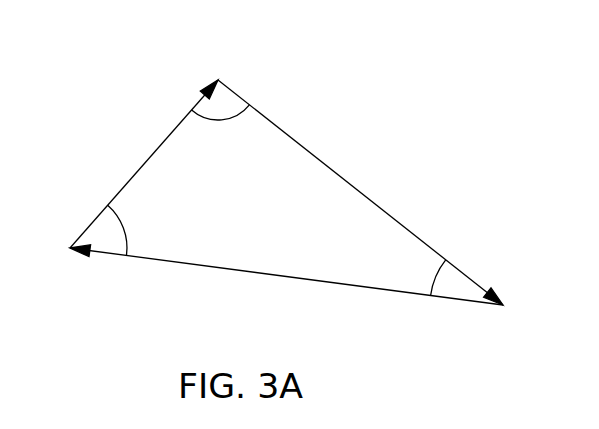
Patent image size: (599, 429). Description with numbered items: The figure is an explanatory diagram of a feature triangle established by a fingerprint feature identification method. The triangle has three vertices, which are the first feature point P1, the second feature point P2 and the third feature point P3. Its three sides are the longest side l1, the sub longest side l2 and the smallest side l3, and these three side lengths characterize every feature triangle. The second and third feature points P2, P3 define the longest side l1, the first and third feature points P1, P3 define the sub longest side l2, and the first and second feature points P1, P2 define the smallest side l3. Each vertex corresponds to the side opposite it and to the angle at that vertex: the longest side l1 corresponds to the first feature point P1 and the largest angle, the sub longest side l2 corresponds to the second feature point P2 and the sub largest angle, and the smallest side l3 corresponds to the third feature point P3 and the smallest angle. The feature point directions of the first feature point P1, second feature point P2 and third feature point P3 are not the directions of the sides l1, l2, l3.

The first feature point P1 is at (220, 59).
The second feature point P2 is at (517, 315).
The third feature point P3 is at (63, 240).
The longest side l1 is at (286, 292).
The sub longest side l2 is at (144, 164).
The smallest side l3 is at (360, 192).